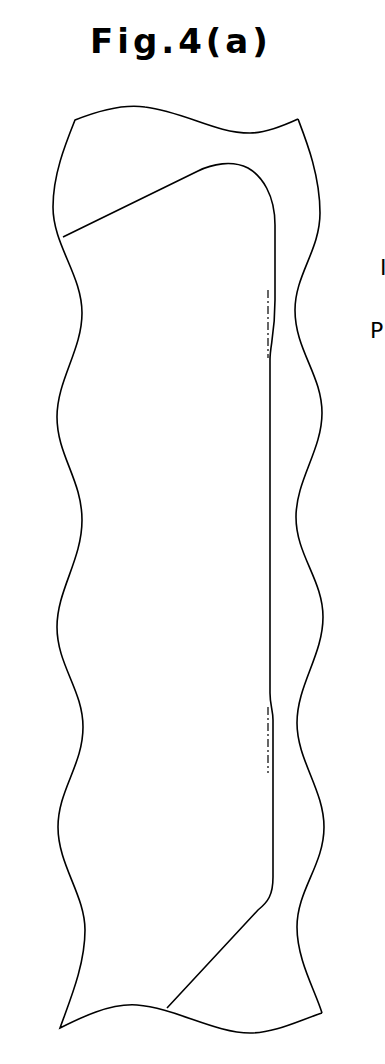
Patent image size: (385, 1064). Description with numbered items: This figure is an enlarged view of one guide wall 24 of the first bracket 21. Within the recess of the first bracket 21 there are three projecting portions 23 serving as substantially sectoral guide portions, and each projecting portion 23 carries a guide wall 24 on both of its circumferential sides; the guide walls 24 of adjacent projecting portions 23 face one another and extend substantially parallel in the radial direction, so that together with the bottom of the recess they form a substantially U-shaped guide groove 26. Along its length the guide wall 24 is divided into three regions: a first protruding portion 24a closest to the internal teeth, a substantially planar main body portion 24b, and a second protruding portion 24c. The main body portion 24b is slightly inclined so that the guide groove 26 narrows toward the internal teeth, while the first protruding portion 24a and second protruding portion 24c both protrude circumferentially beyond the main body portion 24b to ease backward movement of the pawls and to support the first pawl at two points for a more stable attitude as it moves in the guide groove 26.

The first bracket 21 is at (315, 178).
The projecting portion 23 is at (237, 177).
The guide wall 24 is at (270, 616).
The first protruding portion 24a is at (275, 273).
The main body portion 24b is at (270, 537).
The second protruding portion 24c is at (273, 808).
The guide groove 26 is at (310, 592).